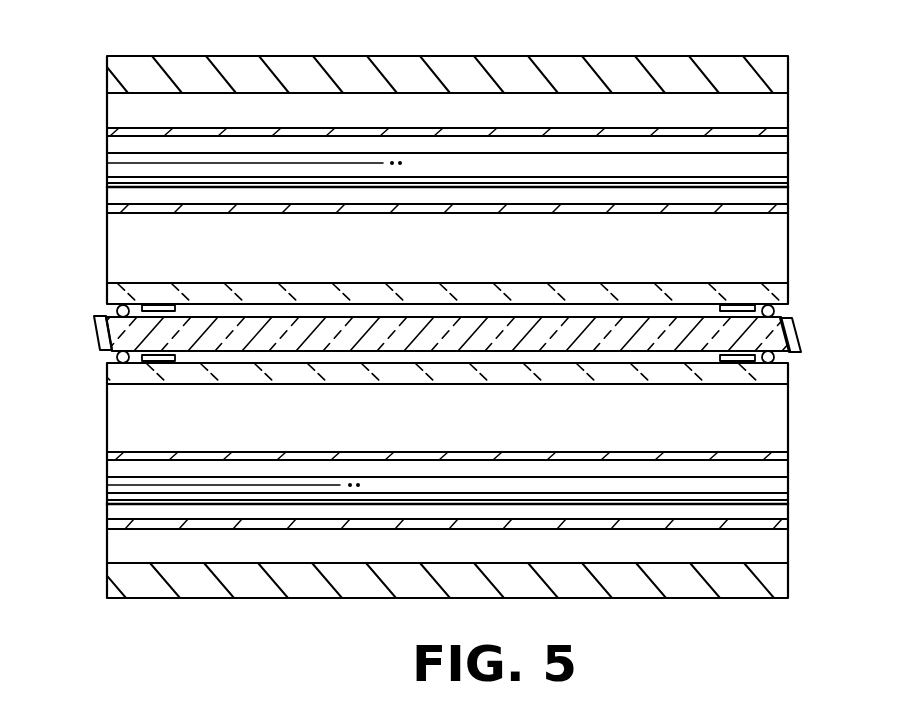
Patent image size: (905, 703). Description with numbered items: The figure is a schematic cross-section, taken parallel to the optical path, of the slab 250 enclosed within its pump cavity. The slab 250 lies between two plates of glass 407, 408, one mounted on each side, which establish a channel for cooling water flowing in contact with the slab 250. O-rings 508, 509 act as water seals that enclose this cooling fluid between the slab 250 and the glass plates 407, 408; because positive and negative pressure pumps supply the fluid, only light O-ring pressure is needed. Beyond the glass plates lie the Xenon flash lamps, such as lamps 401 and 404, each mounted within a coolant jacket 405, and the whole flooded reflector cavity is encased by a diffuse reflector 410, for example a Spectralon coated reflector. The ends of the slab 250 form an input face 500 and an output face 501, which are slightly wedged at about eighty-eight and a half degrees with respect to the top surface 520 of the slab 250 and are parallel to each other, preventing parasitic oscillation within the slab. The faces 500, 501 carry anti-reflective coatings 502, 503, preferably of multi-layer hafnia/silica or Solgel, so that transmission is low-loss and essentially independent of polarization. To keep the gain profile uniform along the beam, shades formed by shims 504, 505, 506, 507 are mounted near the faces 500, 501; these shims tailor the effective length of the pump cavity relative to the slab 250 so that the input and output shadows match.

The diffuse reflector 410 is at (495, 57).
The coolant jacket 405 is at (745, 128).
The lamp 401 is at (773, 170).
The lamp 404 is at (108, 490).
The plate of glass 408 is at (340, 283).
The plate of glass 407 is at (410, 385).
The slab 250 is at (465, 335).
The anti-reflective coating 502 is at (95, 330).
The anti-reflective coating 503 is at (800, 332).
The O-ring 509 is at (775, 311).
The O-ring 508 is at (112, 358).
The shim 506 is at (160, 304).
The shim 507 is at (160, 362).
The shim 504 is at (735, 304).
The shim 505 is at (735, 364).
The top surface 520 is at (262, 312).
The input face 500 is at (66, 355).
The output face 501 is at (826, 349).